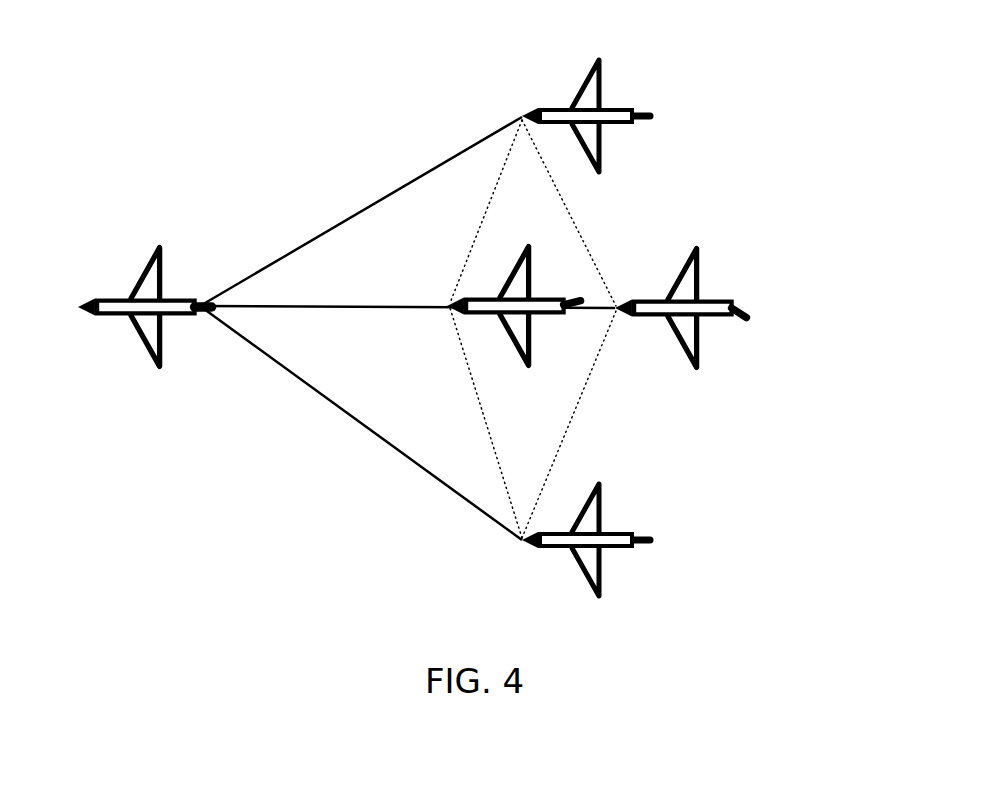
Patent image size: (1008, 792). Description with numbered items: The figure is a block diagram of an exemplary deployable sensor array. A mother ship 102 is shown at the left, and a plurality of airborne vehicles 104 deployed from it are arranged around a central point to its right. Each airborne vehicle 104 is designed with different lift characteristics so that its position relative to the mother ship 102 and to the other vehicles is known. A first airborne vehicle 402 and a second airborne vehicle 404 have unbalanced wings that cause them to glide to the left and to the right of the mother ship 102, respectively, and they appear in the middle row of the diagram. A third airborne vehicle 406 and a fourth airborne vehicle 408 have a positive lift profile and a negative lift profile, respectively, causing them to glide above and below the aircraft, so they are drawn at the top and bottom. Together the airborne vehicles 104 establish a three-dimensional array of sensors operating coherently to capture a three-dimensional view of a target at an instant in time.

The mother ship 102 is at (101, 297).
The airborne vehicle 104 is at (758, 131).
The first airborne vehicle 402 is at (532, 255).
The second airborne vehicle 404 is at (697, 253).
The third airborne vehicle 406 is at (600, 75).
The fourth airborne vehicle 408 is at (600, 490).